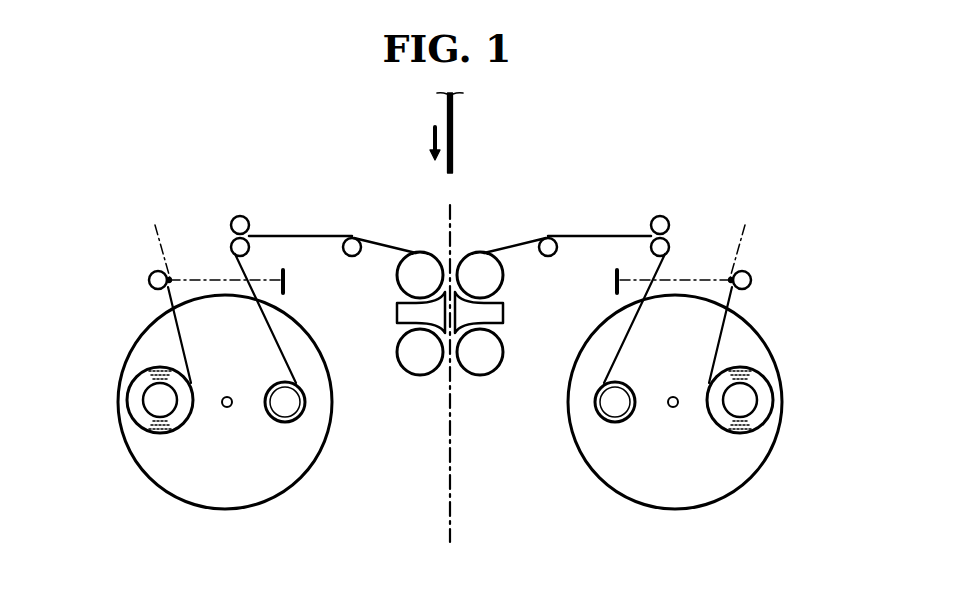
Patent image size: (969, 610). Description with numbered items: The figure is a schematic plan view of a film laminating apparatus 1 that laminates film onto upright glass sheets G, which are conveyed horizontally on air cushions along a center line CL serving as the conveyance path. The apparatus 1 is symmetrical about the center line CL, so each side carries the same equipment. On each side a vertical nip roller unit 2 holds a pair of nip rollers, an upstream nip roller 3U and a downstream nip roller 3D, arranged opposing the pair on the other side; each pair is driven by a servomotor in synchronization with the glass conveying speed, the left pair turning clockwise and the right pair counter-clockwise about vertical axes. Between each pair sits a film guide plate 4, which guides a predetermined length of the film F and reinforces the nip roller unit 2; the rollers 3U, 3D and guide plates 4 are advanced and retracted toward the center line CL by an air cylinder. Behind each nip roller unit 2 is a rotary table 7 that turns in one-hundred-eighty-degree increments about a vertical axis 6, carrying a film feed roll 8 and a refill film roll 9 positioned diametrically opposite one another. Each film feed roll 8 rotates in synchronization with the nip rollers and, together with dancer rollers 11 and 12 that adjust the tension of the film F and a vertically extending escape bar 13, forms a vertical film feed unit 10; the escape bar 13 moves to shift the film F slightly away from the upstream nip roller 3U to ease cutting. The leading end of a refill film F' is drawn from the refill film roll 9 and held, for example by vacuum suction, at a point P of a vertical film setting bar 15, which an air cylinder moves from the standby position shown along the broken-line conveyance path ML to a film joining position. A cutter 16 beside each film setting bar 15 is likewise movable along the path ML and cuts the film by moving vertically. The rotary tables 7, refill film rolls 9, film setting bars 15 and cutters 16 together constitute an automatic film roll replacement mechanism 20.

The film laminating apparatus 1 is at (353, 517).
The vertical nip roller unit 2 is at (478, 388).
The upstream nip roller 3U is at (397, 275).
The downstream nip roller 3D is at (412, 374).
The film guide plate 4 is at (397, 318).
The vertical axis 6 is at (226, 396).
The rotary table 7 is at (225, 510).
The film feed roll 8 is at (286, 423).
The refill film roll 9 is at (140, 375).
The vertical film feed unit 10 is at (288, 202).
The roller 11 is at (232, 234).
The roller 12 is at (238, 216).
The escape bar 13 is at (343, 248).
The film setting bar 15 is at (149, 277).
The cutter 16 is at (287, 290).
The automatic film roll replacement mechanism 20 is at (103, 408).
The glass sheet G is at (453, 138).
The center line CL is at (448, 518).
The film F is at (456, 276).
The refill film F' is at (450, 335).
The conveyance path ML is at (446, 237).
The point P is at (166, 277).